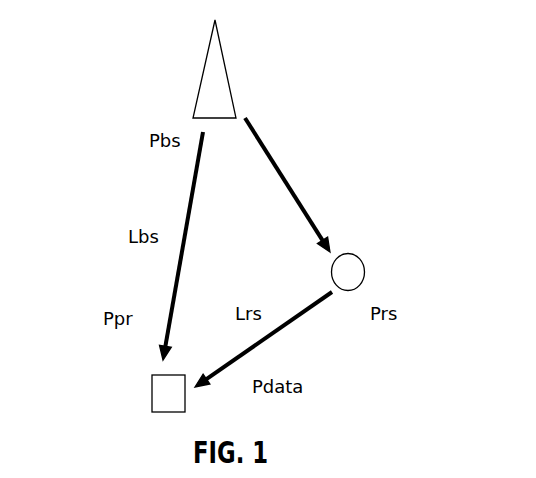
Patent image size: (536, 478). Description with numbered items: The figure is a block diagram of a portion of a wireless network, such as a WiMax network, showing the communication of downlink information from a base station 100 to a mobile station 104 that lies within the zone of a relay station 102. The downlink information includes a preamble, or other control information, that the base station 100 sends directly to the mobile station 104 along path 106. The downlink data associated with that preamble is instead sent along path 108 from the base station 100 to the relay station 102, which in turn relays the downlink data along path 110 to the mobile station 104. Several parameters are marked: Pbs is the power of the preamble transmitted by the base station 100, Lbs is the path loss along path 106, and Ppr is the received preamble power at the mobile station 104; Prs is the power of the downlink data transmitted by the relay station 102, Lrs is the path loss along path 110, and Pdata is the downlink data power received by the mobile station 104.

The base station 100 is at (264, 69).
The relay station 102 is at (402, 266).
The mobile station 104 is at (110, 391).
The path 106 is at (211, 246).
The path 108 is at (295, 185).
The path 110 is at (280, 339).